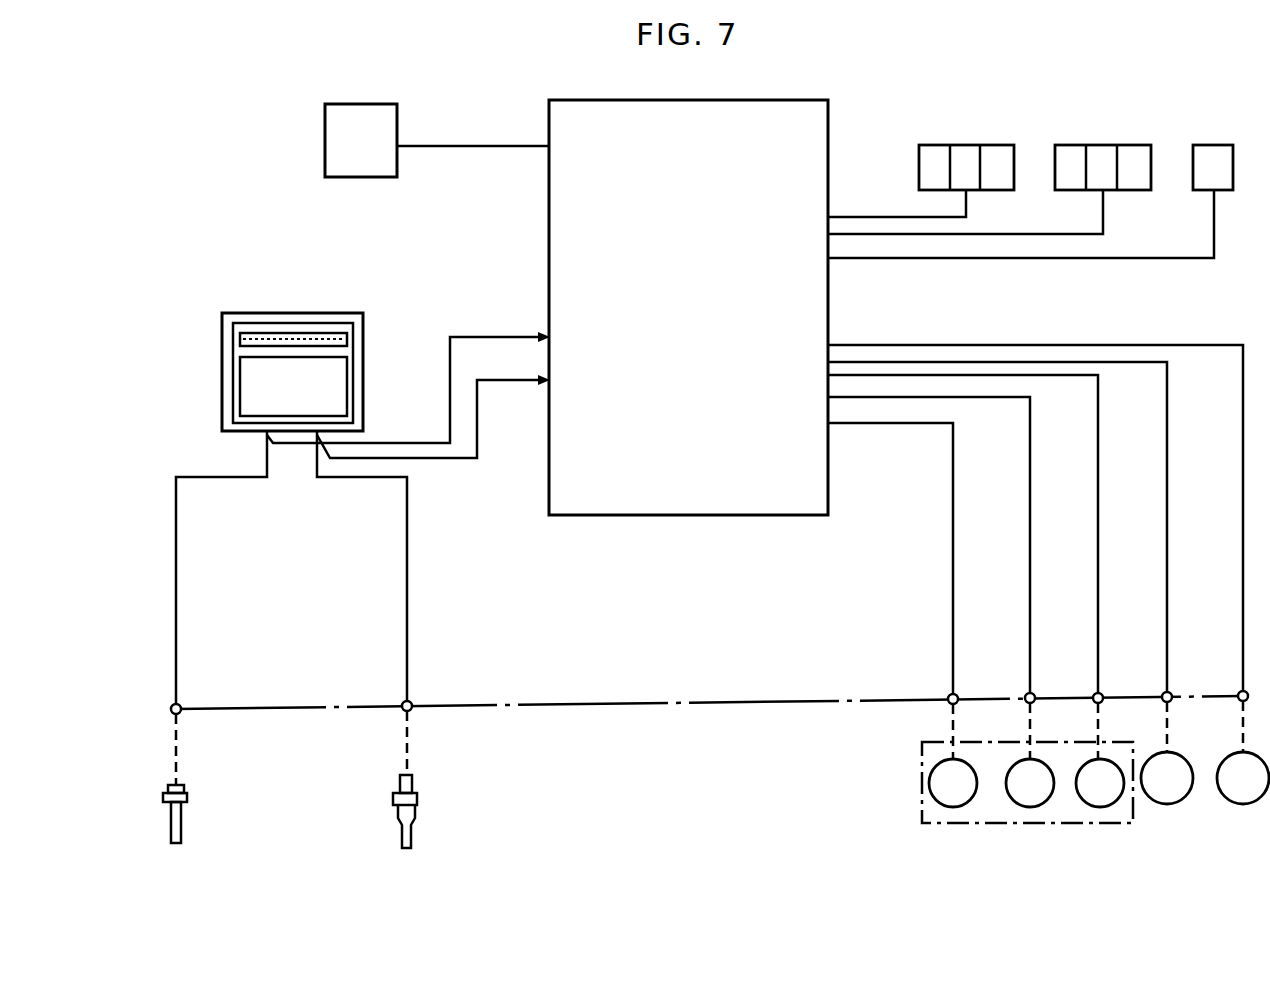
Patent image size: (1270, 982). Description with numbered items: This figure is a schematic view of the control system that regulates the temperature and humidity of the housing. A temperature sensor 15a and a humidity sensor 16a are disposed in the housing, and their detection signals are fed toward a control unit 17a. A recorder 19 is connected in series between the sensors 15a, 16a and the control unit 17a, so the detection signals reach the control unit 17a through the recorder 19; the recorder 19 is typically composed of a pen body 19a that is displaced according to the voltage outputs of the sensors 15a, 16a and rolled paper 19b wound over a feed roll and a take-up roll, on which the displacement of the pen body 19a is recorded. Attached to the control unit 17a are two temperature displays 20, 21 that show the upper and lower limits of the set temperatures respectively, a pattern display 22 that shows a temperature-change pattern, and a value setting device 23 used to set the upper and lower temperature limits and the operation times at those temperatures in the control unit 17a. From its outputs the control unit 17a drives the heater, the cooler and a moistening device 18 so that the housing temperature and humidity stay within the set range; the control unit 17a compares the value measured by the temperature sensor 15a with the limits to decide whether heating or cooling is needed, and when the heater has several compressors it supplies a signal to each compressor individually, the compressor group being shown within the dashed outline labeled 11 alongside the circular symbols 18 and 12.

The control unit 17a is at (707, 315).
The value setting device 23 is at (376, 155).
The temperature display 20 is at (981, 145).
The temperature display 21 is at (1102, 145).
The pattern display 22 is at (1213, 145).
The recorder 19 is at (265, 347).
The pen body 19a is at (269, 333).
The rolled paper 19b is at (257, 358).
The temperature sensor 15a is at (170, 826).
The humidity sensor 16a is at (400, 828).
The coffee makers 11 is at (1055, 824).
The moistening device 18 is at (1167, 804).
The pump 12 is at (1243, 804).